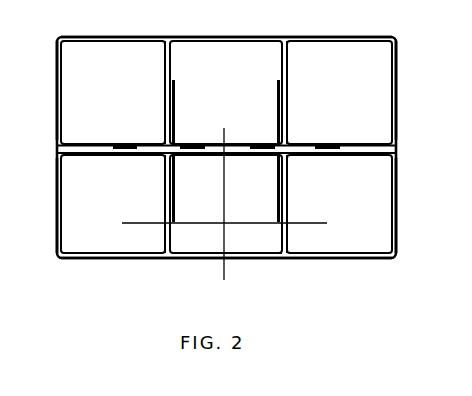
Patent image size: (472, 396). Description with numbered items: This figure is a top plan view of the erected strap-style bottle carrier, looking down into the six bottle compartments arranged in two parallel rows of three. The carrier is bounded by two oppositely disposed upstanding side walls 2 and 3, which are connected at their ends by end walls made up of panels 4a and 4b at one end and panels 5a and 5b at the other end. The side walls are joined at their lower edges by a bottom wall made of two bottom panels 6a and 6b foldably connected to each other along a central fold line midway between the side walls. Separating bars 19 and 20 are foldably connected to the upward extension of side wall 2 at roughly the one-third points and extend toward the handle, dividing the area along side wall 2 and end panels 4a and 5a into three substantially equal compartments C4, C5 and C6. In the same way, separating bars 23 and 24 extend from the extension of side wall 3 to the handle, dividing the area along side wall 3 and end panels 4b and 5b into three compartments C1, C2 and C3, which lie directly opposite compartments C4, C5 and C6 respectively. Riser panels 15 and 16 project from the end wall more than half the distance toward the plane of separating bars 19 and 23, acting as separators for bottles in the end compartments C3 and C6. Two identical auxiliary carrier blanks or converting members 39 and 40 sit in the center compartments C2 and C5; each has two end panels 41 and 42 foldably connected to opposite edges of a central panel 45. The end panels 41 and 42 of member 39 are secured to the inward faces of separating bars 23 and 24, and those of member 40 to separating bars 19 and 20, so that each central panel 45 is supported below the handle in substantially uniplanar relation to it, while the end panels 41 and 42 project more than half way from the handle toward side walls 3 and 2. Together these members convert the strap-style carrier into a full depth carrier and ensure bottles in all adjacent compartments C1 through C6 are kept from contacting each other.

The side wall 2 is at (238, 37).
The side wall 3 is at (276, 240).
The end wall panel 4a is at (397, 104).
The end wall panel 4b is at (397, 207).
The end wall panel 5a is at (57, 95).
The end wall panel 5b is at (57, 212).
The bottom panel 6a is at (95, 56).
The bottom panel 6b is at (72, 218).
The riser panel 15 is at (122, 205).
The riser panel 16 is at (243, 128).
The separating bar 19 is at (171, 69).
The separating bar 20 is at (288, 63).
The separating bar 23 is at (168, 238).
The separating bar 24 is at (285, 238).
The auxiliary carrier blank and converting member 39 is at (275, 180).
The auxiliary carrier blank and converting member 40 is at (273, 98).
The end panel 41 is at (175, 108).
The end panel 42 is at (277, 117).
The central panel 45 is at (195, 142).
The bottle compartment C1 is at (368, 237).
The bottle compartment C2 is at (193, 237).
The bottle compartment C3 is at (88, 240).
The bottle compartment C4 is at (340, 67).
The bottle compartment C5 is at (252, 63).
The bottle compartment C6 is at (128, 56).